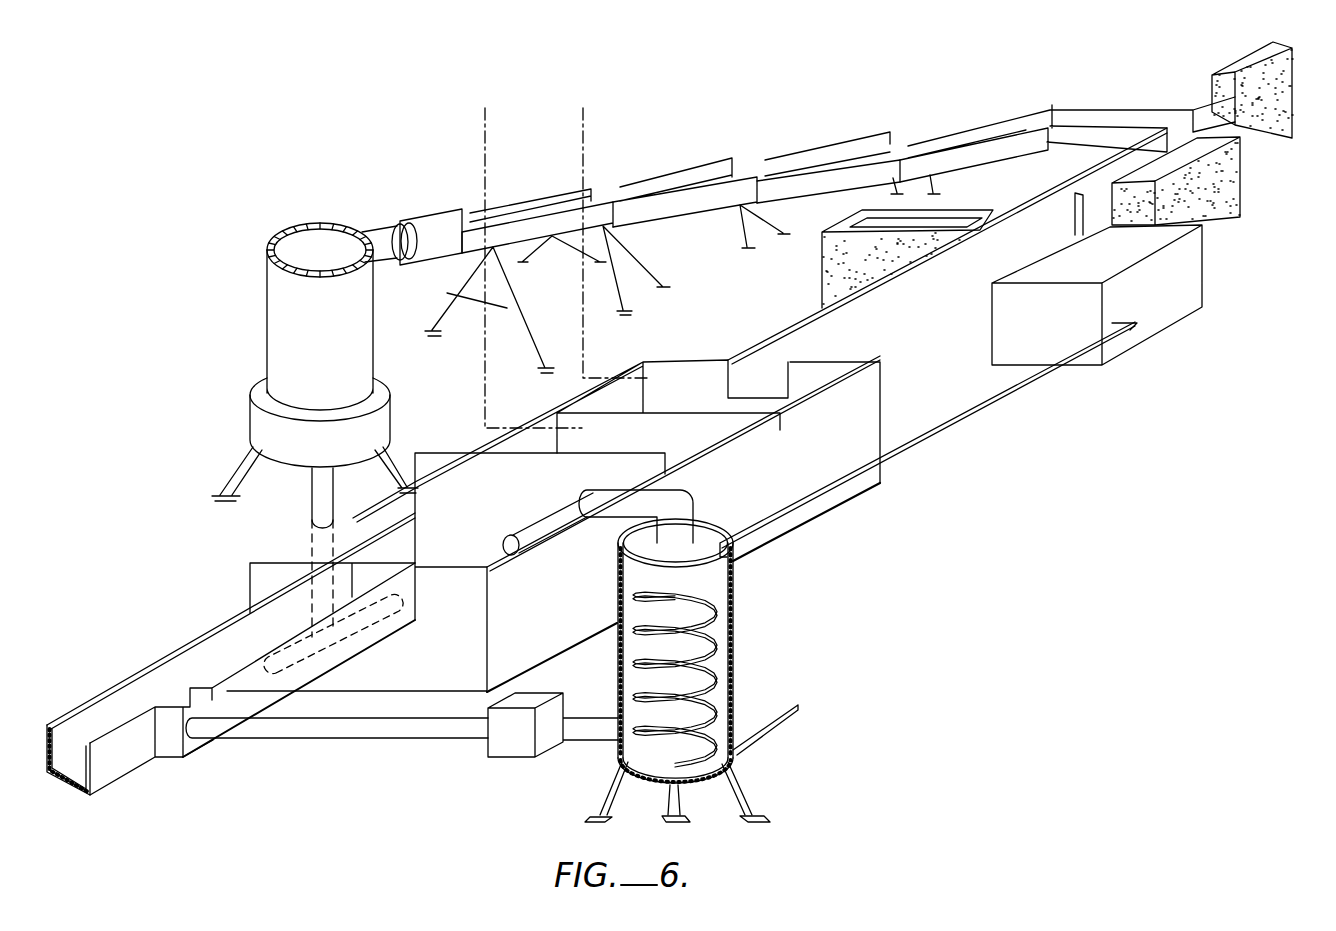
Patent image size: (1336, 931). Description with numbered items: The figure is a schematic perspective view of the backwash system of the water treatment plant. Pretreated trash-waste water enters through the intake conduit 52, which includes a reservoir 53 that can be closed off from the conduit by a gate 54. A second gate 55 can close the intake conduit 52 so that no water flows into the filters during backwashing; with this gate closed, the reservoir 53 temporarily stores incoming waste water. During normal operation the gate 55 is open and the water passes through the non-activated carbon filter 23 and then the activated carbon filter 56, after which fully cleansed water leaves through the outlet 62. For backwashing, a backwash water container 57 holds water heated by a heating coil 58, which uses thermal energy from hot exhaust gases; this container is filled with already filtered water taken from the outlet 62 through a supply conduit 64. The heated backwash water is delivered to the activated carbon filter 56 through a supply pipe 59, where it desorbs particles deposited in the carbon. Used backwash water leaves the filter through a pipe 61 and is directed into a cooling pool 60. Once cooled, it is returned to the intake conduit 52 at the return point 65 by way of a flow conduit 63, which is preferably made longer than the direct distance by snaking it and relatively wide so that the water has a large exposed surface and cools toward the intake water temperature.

The non-activated carbon filter 23 is at (717, 402).
The intake conduit 52 is at (878, 330).
The reservoir 53 is at (1127, 253).
The gate 54 is at (1227, 203).
The gate 55 is at (835, 260).
The activated carbon filter 56 is at (440, 537).
The backwash water container 57 is at (733, 598).
The heating coil 58 is at (703, 662).
The supply pipe 59 is at (682, 502).
The cooling pool 60 is at (304, 248).
The pipe 61 is at (313, 493).
The outlet 62 is at (125, 763).
The flow conduit 63 is at (655, 173).
The supply conduit 64 is at (297, 728).
The return point 65 is at (1137, 117).